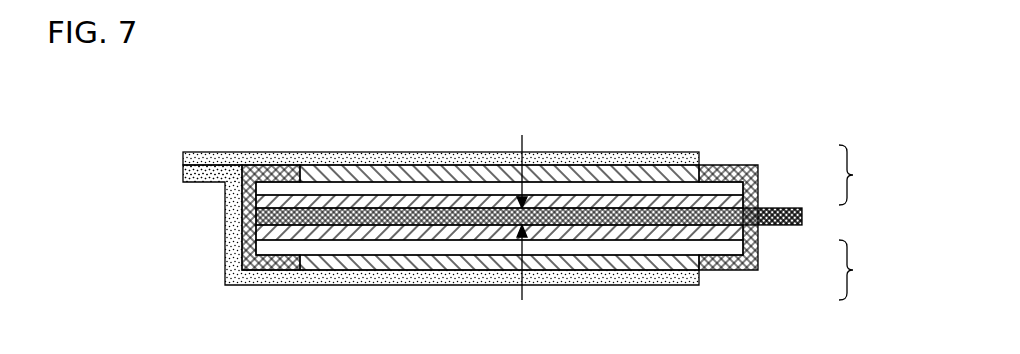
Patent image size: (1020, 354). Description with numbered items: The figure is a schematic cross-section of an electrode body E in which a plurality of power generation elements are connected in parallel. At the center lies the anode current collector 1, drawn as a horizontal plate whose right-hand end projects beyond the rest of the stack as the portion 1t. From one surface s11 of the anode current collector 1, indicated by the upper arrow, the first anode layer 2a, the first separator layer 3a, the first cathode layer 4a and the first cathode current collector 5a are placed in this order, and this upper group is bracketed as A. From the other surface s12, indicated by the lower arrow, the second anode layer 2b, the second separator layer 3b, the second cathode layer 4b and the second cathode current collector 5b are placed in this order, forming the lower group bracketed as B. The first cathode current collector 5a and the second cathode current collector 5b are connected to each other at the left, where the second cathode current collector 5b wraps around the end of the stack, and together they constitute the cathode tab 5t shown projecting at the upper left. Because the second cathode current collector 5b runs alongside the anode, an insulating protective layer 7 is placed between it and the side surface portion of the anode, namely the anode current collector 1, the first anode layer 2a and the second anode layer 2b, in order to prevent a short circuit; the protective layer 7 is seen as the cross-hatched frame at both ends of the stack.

The anode current collector 1 is at (595, 218).
The current collector tab 1t is at (788, 221).
The first anode layer 2a is at (730, 201).
The second anode layer 2b is at (730, 232).
The first separator layer 3a is at (728, 190).
The second separator layer 3b is at (730, 247).
The first cathode layer 4a is at (687, 177).
The second cathode layer 4b is at (687, 263).
The first cathode current collector 5a is at (417, 158).
The second cathode current collector 5b is at (420, 275).
The cathode tab 5t is at (196, 168).
The insulating protective layer 7 is at (270, 172).
The one surface of anode current collector s11 is at (522, 160).
The another surface of anode current collector s12 is at (522, 276).
The upper electrode unit A is at (858, 175).
The lower electrode unit B is at (858, 270).
The electrode body E is at (740, 107).